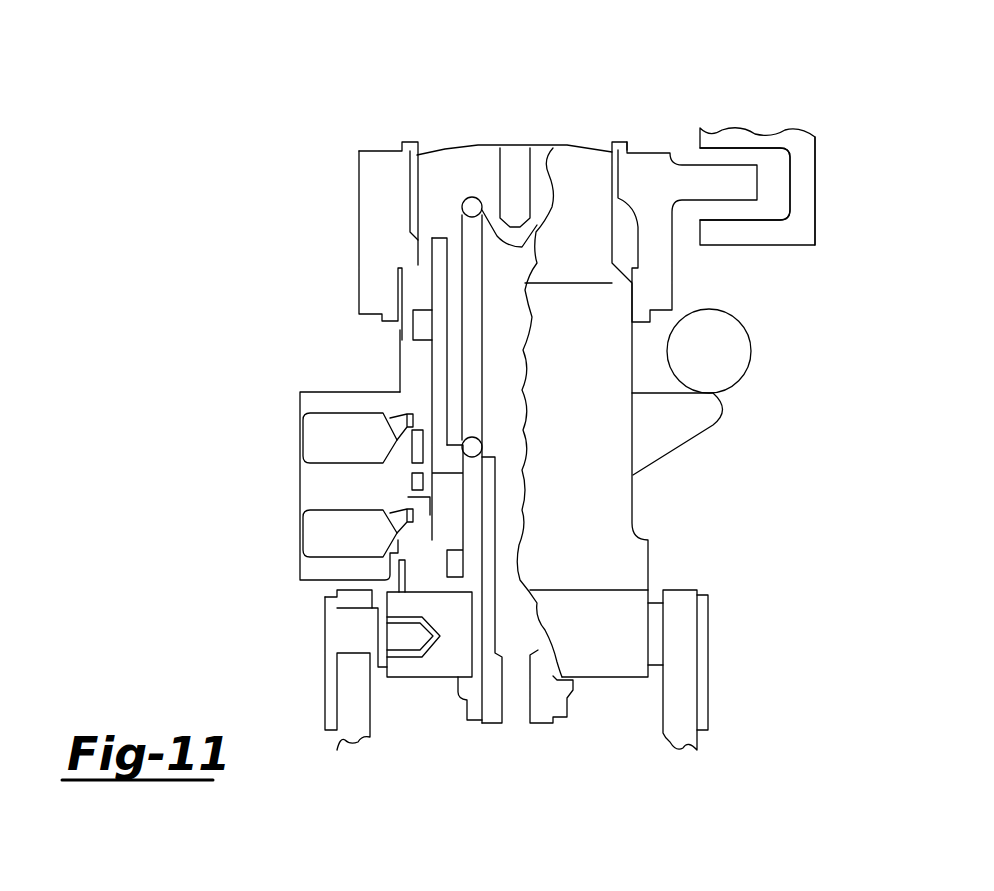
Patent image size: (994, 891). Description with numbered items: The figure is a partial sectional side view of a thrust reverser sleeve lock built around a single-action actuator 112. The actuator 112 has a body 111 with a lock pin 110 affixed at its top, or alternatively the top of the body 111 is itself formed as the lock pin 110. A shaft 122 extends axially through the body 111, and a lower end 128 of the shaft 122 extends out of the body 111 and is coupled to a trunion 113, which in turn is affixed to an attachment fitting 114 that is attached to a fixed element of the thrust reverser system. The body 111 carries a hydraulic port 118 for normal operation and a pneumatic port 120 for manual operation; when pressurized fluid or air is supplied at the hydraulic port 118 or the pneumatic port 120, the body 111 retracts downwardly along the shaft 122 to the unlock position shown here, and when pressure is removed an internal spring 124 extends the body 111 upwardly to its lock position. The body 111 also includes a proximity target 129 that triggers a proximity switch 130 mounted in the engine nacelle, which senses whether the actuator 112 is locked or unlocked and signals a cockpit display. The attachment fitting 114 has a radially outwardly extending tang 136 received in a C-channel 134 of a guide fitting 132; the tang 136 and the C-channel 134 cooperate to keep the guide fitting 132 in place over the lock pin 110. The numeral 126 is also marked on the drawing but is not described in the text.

The lock pin 110 is at (477, 143).
The body 111 is at (400, 370).
The actuator 112 is at (652, 535).
The trunion 113 is at (708, 693).
The attachment fitting 114 is at (647, 145).
The hydraulic port 118 is at (300, 447).
The pneumatic port 120 is at (300, 533).
The shaft 122 is at (489, 532).
The internal spring 124 is at (447, 222).
The strip 126 is at (432, 240).
The lower end 128 is at (483, 723).
The proximity target 129 is at (705, 433).
The proximity switch 130 is at (752, 356).
The guide fitting 132 is at (826, 222).
The C-channel 134 is at (815, 142).
The tang 136 is at (757, 182).